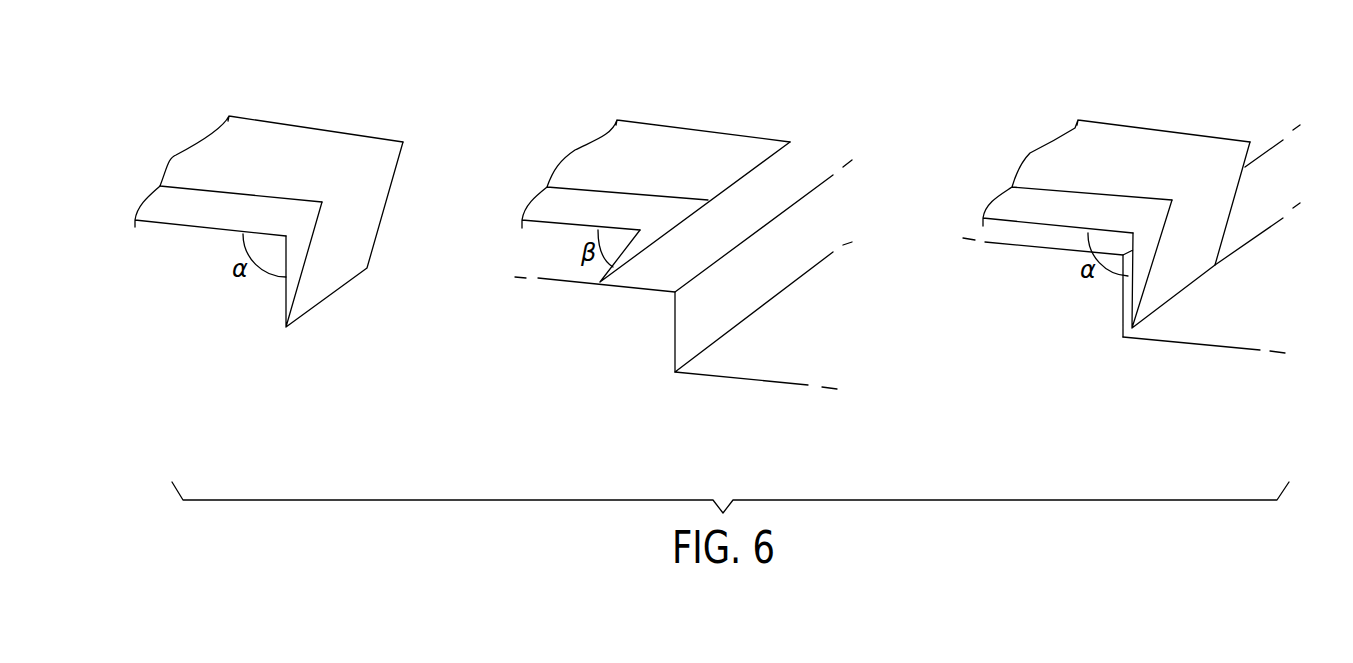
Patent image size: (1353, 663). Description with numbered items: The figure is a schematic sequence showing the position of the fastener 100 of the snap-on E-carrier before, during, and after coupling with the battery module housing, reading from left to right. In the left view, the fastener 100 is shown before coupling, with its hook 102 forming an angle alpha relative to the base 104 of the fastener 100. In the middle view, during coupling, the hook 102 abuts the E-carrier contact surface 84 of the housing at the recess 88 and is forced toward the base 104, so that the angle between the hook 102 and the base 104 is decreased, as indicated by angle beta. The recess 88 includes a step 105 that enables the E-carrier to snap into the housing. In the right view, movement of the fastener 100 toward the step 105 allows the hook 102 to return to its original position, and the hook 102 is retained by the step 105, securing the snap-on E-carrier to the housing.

The fastener 100 is at (193, 84).
The base 104 is at (293, 145).
The hook 102 is at (325, 300).
The E-carrier contact surface 84 is at (568, 280).
The recess 88 is at (585, 287).
The step 105 is at (673, 348).